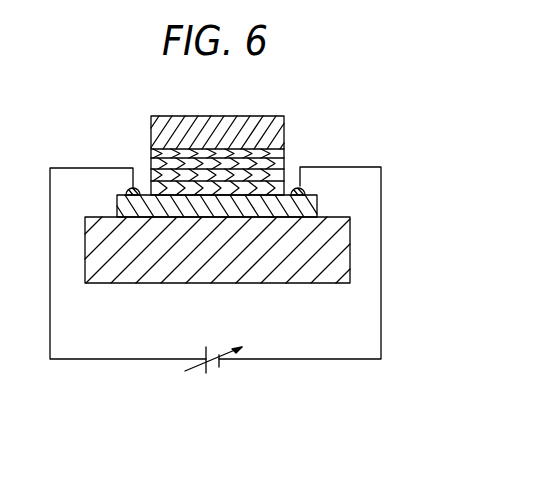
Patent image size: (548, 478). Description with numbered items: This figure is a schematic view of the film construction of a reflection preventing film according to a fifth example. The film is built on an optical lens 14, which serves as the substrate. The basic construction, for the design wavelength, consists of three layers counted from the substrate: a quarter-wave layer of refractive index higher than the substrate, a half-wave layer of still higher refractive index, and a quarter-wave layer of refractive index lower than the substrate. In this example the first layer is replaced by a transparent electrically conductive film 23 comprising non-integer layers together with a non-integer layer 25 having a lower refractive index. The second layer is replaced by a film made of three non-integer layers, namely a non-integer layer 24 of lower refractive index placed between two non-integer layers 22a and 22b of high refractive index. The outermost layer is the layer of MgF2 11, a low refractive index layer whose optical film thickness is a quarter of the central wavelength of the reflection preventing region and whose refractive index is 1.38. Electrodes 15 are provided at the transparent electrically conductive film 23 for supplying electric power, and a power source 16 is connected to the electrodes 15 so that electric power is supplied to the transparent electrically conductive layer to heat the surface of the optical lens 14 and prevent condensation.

The layer of MgF2 11 is at (285, 117).
The non-integer layer of high refractive index 22a is at (286, 159).
The non-integer layer of lower refractive index 24 is at (286, 168).
The non-integer layer of high refractive index 22b is at (286, 177).
The transparent electrically conductive film 23 is at (312, 204).
The optical lens 14 is at (343, 247).
The electrodes 15 is at (126, 190).
The non-integer layer having a lower refractive index 25 is at (150, 190).
The power source 16 is at (202, 370).